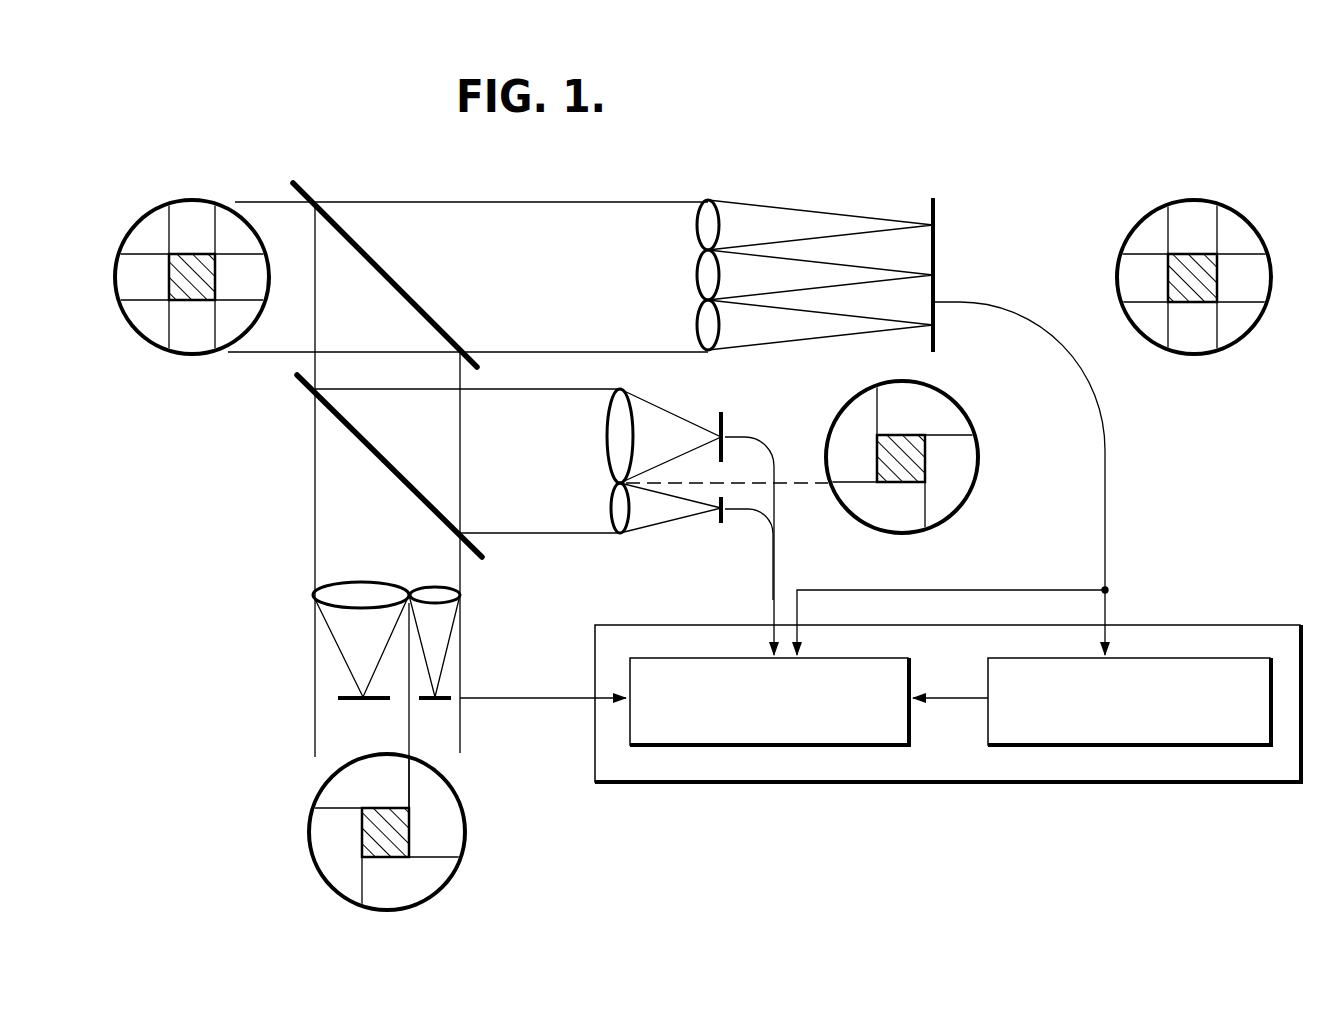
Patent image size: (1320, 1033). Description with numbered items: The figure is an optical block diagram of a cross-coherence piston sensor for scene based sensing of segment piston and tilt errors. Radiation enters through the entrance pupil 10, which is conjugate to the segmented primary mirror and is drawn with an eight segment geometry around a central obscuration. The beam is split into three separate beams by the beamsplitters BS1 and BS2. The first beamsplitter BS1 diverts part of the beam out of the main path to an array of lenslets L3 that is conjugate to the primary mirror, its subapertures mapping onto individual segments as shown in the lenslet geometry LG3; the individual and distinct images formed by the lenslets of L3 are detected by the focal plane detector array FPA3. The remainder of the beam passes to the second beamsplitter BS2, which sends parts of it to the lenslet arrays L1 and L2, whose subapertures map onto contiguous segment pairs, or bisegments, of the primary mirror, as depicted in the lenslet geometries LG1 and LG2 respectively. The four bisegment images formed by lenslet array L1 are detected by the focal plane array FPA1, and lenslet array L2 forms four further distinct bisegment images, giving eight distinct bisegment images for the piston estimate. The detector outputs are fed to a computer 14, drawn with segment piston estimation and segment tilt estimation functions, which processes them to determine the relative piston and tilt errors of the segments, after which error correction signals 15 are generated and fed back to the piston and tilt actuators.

The entrance pupil 10 is at (195, 198).
The first beamsplitter BS1 is at (315, 183).
The second beamsplitter BS2 is at (310, 398).
The lenslet array L1 is at (310, 596).
The lenslet array L2 is at (648, 395).
The array of lenslets L3 is at (717, 190).
The focal plane array FPA1 is at (335, 704).
The focal plane detector array FPA3 is at (942, 212).
The lenslet array geometry LG1 is at (305, 822).
The lenslet array geometry LG2 is at (956, 521).
The lenslet array geometry LG3 is at (1148, 210).
The computer 14 is at (1200, 618).
The error correction signals 15 is at (983, 784).